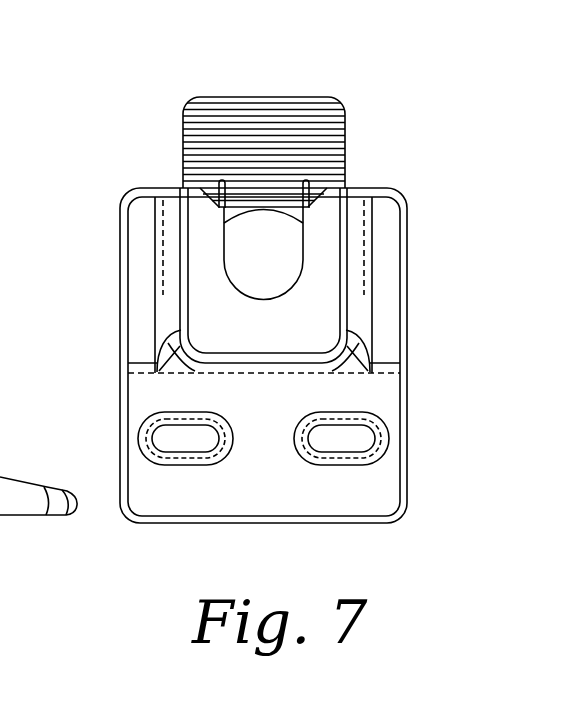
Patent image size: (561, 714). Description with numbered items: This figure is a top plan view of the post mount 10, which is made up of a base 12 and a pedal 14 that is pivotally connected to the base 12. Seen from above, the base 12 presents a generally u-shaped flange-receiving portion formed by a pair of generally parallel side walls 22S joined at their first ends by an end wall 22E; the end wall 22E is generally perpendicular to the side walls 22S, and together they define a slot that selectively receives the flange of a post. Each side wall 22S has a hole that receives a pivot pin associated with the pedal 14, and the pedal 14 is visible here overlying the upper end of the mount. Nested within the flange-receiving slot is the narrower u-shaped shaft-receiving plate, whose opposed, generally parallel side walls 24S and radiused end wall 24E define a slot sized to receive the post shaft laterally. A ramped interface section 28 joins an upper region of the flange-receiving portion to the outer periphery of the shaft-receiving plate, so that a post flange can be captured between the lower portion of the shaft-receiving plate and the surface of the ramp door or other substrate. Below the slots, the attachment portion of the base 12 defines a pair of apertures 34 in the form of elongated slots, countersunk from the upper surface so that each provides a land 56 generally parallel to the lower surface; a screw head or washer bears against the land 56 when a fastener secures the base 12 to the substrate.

The post mount 10 is at (445, 406).
The base 12 is at (385, 238).
The pedal 14 is at (253, 103).
The side walls 22S is at (143, 295).
The end wall 22E is at (261, 377).
The side walls 24S is at (207, 226).
The end wall 24E is at (283, 340).
The ramped interface section 28 is at (167, 263).
The apertures 34 is at (320, 439).
The land 56 is at (185, 458).